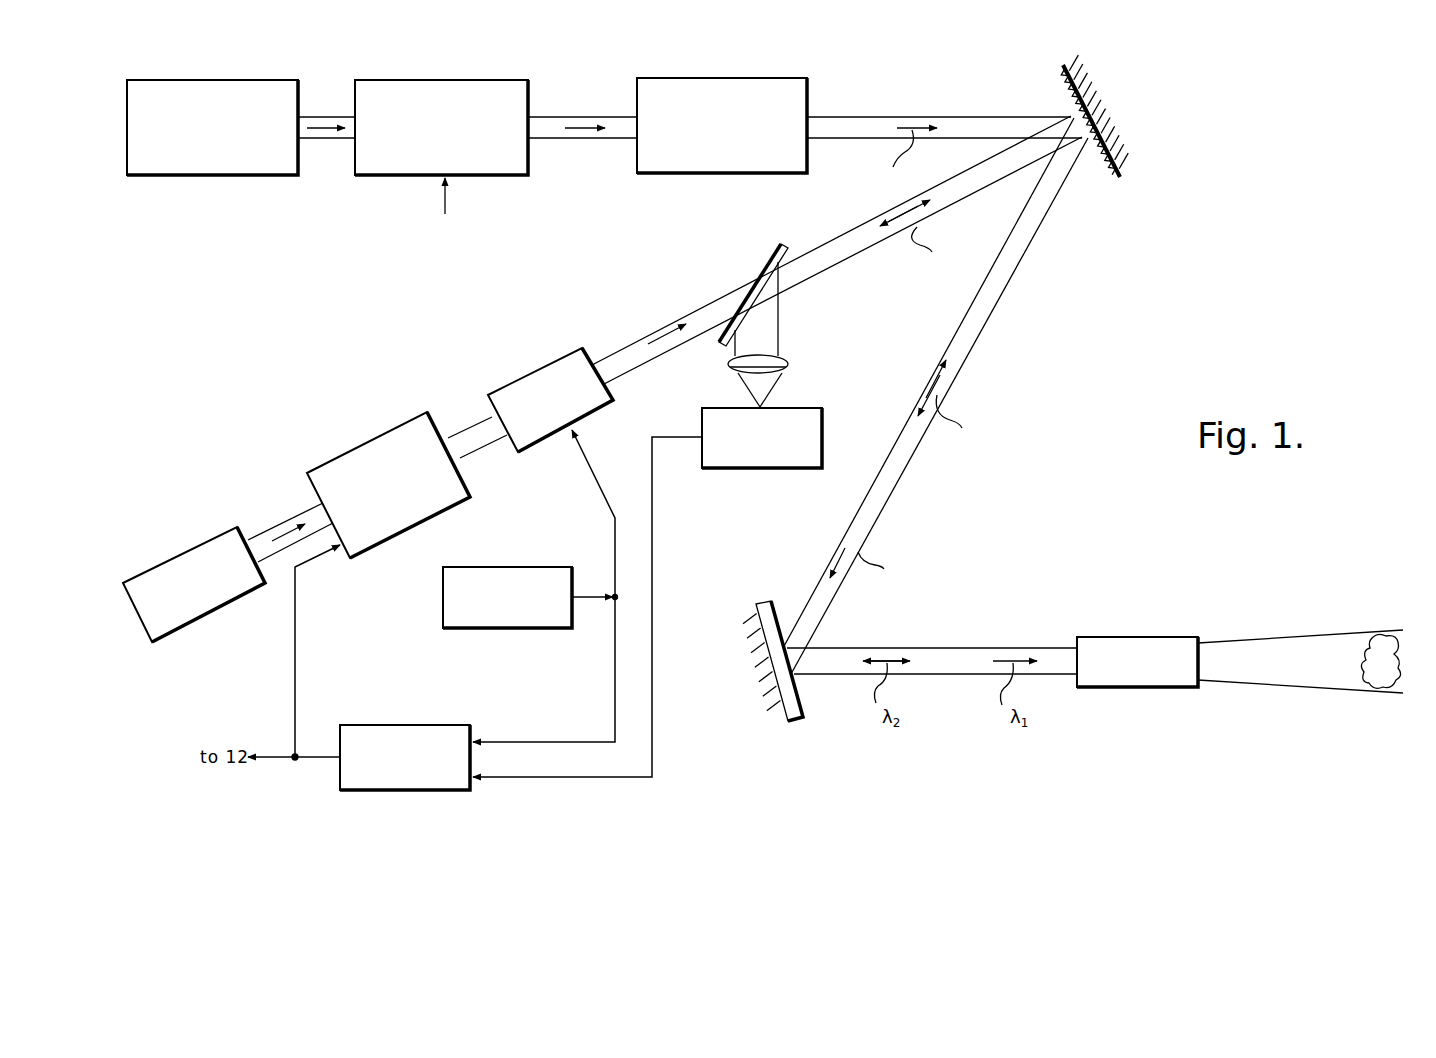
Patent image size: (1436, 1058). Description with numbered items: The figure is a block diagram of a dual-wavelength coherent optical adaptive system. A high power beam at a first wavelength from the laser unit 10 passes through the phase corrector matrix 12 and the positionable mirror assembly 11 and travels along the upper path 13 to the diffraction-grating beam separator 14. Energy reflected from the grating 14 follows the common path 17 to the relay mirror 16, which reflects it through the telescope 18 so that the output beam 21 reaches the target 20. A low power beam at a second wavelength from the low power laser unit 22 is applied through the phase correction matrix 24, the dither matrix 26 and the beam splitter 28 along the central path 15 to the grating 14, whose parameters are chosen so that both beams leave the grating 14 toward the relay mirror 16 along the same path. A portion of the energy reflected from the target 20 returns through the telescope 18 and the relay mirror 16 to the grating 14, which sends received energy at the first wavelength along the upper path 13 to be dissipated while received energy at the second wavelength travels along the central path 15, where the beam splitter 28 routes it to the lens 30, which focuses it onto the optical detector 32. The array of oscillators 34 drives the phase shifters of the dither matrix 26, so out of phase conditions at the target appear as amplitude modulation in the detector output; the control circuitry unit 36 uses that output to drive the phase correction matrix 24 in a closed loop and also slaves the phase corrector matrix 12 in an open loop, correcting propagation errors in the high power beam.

The laser unit 10 is at (297, 83).
The positionable mirror assembly 11 is at (801, 84).
The phase corrector matrix 12 is at (527, 83).
The upper path 13 is at (872, 117).
The diffraction-grating beam separator 14 is at (1061, 64).
The central path 15 is at (845, 260).
The relay mirror 16 is at (790, 726).
The combined beam path 17 is at (976, 345).
The telescope 18 is at (1198, 637).
The target 20 is at (1383, 681).
The output beam 21 is at (1291, 637).
The low power laser unit 22 is at (235, 530).
The phase correction matrix 24 is at (424, 416).
The dither matrix 26 is at (582, 349).
The beam splitter 28 is at (766, 256).
The lens 30 is at (790, 360).
The optical detector 32 is at (815, 415).
The array of oscillators 34 is at (446, 626).
The control circuitry unit 36 is at (465, 730).